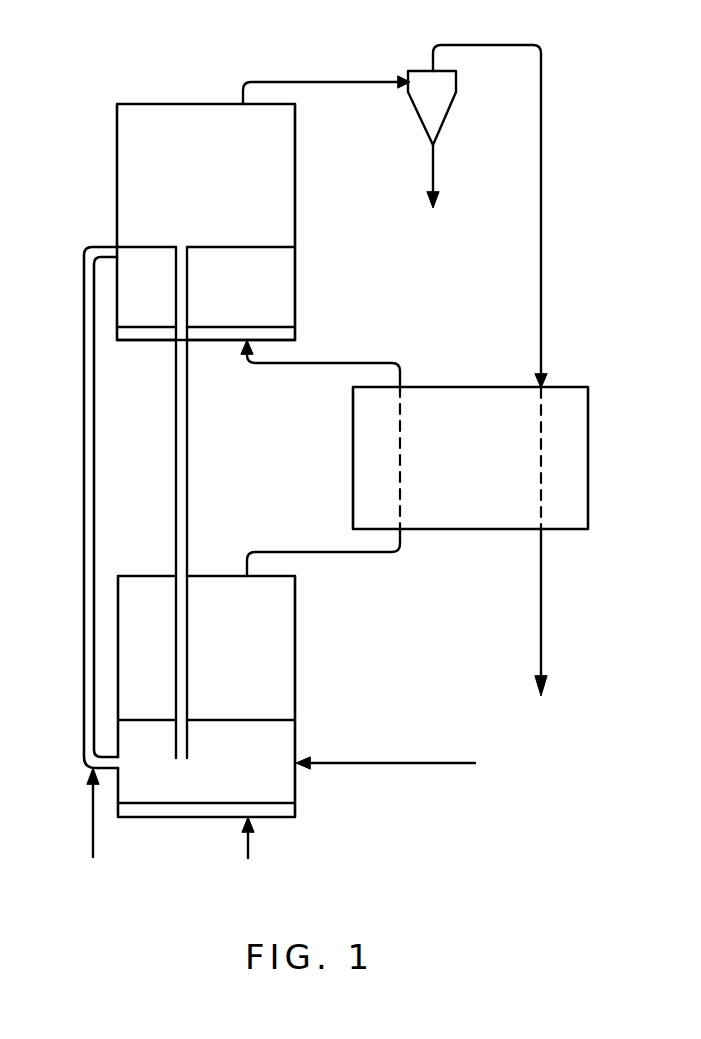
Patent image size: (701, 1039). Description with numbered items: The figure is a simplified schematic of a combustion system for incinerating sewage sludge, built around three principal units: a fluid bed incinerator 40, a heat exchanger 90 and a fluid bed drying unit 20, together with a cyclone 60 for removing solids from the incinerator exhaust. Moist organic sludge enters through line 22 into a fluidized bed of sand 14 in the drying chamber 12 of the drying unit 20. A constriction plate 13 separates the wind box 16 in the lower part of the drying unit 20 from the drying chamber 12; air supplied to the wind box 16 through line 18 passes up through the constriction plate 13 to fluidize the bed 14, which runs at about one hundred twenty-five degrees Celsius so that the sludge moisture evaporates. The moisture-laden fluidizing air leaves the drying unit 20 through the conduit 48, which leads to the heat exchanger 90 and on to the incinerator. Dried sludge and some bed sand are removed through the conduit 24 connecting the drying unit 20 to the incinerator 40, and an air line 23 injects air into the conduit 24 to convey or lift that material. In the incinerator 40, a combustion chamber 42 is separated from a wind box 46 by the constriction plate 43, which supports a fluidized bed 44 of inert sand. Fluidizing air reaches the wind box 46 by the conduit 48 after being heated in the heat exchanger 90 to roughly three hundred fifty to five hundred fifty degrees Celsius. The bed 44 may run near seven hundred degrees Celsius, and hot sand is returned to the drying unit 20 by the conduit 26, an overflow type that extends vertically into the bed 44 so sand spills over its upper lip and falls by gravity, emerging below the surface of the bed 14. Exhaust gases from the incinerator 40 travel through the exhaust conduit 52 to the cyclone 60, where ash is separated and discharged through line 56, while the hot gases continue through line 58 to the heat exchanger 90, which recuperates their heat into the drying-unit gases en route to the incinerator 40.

The drying chamber 12 is at (275, 686).
The constriction plate 13 is at (170, 804).
The fluidized bed of sand 14 is at (245, 771).
The wind box 16 is at (283, 810).
The air line 18 is at (250, 848).
The fluid bed drying unit 20 is at (296, 614).
The sludge feed line 22 is at (420, 762).
The air line 23 is at (90, 808).
The conduit 24 is at (84, 477).
The overflow conduit 26 is at (187, 483).
The fluid bed incinerator 40 is at (117, 130).
The combustion chamber 42 is at (275, 206).
The constriction plate 43 is at (265, 327).
The fluidized bed 44 is at (240, 291).
The wind box 46 is at (150, 336).
The conduit 48 is at (386, 363).
The exhaust conduit 52 is at (326, 80).
The solids discharge line 56 is at (435, 175).
The gas line 58 is at (542, 177).
The cyclone 60 is at (457, 90).
The heat exchanger 90 is at (588, 432).